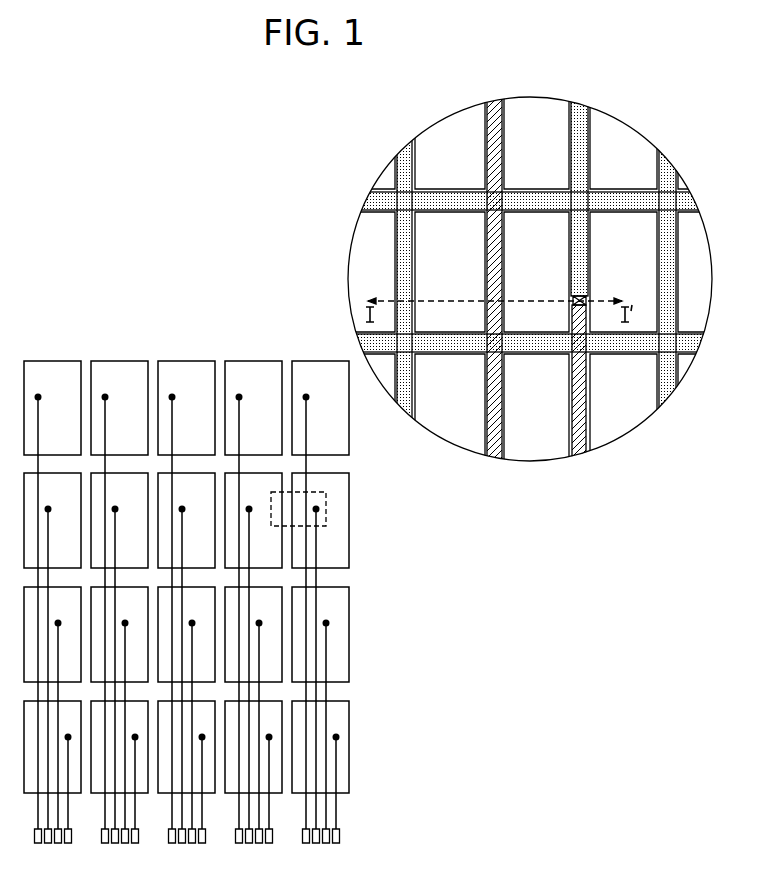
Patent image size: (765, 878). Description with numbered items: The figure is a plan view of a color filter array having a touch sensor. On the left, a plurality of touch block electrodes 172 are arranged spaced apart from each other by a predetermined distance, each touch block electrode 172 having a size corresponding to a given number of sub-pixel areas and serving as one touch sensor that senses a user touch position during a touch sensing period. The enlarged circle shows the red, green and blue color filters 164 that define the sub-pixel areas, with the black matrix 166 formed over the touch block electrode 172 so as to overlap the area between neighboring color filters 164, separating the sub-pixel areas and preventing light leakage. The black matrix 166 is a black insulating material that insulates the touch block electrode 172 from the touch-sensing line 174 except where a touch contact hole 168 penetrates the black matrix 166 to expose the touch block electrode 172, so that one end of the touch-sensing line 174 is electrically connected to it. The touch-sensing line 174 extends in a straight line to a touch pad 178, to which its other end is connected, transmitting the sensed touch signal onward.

The color filter 164 is at (375, 240).
The black matrix 166 is at (372, 198).
The touch contact hole 168 is at (577, 296).
The touch block electrode 172 is at (404, 147).
The touch-sensing line 174 is at (489, 455).
The touch pad 178 is at (340, 836).